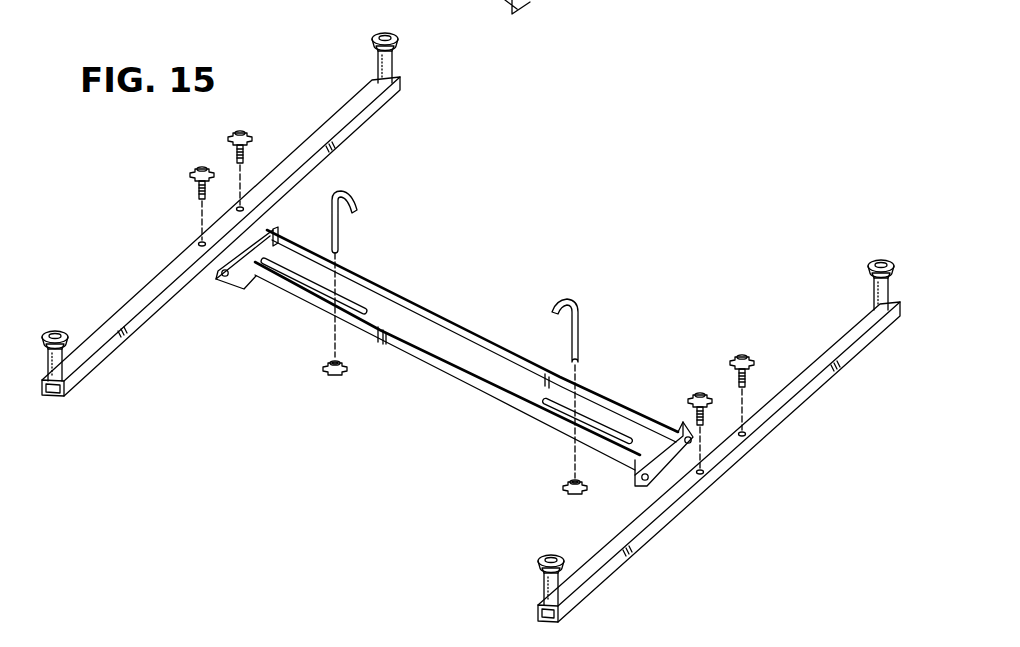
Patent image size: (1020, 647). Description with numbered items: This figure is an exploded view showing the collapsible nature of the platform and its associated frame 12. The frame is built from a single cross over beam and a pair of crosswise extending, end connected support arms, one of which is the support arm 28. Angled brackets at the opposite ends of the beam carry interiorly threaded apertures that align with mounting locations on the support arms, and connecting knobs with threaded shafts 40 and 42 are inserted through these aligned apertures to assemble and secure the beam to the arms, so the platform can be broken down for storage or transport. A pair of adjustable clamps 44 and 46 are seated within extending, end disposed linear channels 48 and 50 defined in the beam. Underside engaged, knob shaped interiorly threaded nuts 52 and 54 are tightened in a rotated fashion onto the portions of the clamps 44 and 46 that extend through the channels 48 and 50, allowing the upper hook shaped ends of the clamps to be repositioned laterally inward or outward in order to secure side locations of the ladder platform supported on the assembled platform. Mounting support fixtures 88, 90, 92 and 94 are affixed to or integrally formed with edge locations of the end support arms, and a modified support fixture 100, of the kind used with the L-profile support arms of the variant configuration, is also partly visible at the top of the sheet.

The frame 12 is at (524, 178).
The support arm 28 is at (143, 298).
The connecting knob 40 is at (230, 130).
The connecting knob 42 is at (712, 404).
The adjustable clamp 44 is at (348, 202).
The adjustable clamp 46 is at (568, 302).
The channel 48 is at (356, 308).
The channel 50 is at (606, 427).
The interiorly threaded nut 52 is at (336, 376).
The interiorly threaded nut 54 is at (562, 488).
The mounting support fixture 88 is at (57, 367).
The mounting support fixture 90 is at (377, 72).
The mounting support fixture 92 is at (543, 584).
The mounting support fixture 94 is at (875, 292).
The modified support fixture 100 is at (548, 4).